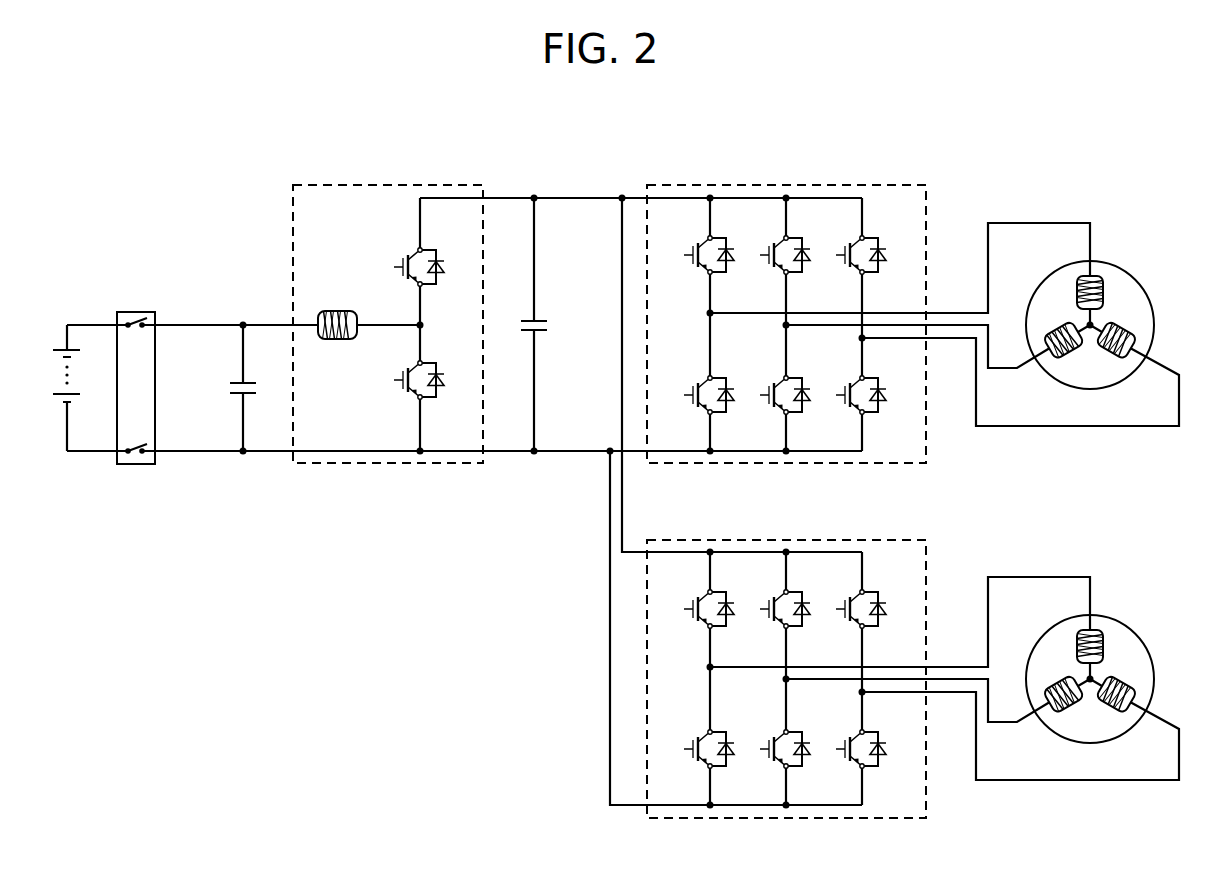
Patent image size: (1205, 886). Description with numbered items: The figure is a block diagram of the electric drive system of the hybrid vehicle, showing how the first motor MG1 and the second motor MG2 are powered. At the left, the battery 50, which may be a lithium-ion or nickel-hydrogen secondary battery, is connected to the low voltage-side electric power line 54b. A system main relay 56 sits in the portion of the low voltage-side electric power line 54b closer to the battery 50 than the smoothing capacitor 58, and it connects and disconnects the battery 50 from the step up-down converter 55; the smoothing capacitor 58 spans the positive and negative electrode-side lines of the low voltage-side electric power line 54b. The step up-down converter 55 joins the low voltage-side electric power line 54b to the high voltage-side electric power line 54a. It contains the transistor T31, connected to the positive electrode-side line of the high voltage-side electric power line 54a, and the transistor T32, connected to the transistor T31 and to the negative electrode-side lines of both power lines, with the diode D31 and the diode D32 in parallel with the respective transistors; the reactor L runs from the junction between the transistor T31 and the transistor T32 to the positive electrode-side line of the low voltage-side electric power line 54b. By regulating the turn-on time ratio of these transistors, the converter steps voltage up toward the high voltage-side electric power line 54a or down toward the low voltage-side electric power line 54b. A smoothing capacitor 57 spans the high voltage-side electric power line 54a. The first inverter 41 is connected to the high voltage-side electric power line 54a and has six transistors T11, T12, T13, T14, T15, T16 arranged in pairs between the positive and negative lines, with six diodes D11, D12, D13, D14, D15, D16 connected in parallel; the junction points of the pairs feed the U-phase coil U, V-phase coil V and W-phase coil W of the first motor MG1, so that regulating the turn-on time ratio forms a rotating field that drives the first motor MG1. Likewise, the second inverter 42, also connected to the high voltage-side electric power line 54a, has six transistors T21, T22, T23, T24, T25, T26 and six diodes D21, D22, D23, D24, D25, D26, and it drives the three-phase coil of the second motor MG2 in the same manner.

The battery 50 is at (58, 328).
The system main relay 56 is at (135, 312).
The low voltage-side electric power line 54b is at (205, 328).
The smoothing capacitor 58 is at (250, 380).
The step up-down converter 55 is at (388, 300).
The reactor L is at (336, 310).
The transistor T31 is at (400, 261).
The diode D31 is at (433, 278).
The transistor T32 is at (400, 374).
The diode D32 is at (433, 391).
The smoothing capacitor 57 is at (541, 318).
The high voltage-side electric power line 54a is at (597, 203).
The first inverter 41 is at (786, 300).
The transistor T11 is at (692, 249).
The transistor T12 is at (768, 249).
The transistor T13 is at (844, 249).
The transistor T14 is at (692, 389).
The transistor T15 is at (768, 389).
The transistor T16 is at (844, 389).
The diode D11 is at (730, 266).
The diode D12 is at (806, 266).
The diode D13 is at (882, 266).
The diode D14 is at (730, 406).
The diode D15 is at (806, 406).
The diode D16 is at (882, 406).
The first motor MG1 is at (943, 319).
The U-phase coil U is at (1076, 251).
The V-phase coil V is at (1013, 354).
The W-phase coil W is at (1168, 354).
The second inverter 42 is at (786, 654).
The transistor T21 is at (692, 603).
The transistor T22 is at (768, 603).
The transistor T23 is at (844, 603).
The transistor T24 is at (692, 743).
The transistor T25 is at (768, 743).
The transistor T26 is at (844, 743).
The diode D21 is at (730, 620).
The diode D22 is at (806, 620).
The diode D23 is at (882, 620).
The diode D24 is at (730, 760).
The diode D25 is at (806, 760).
The diode D26 is at (882, 760).
The second motor MG2 is at (1120, 620).